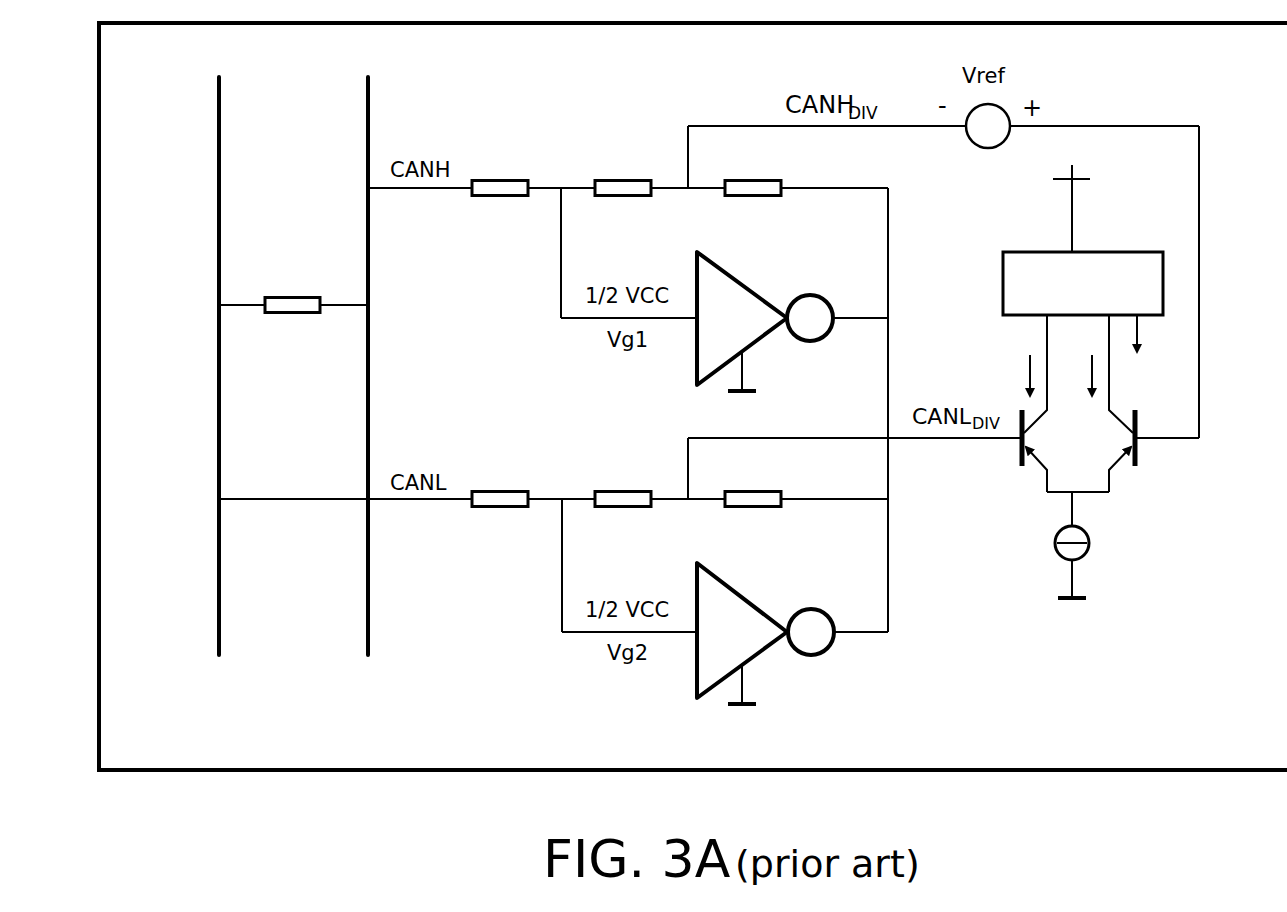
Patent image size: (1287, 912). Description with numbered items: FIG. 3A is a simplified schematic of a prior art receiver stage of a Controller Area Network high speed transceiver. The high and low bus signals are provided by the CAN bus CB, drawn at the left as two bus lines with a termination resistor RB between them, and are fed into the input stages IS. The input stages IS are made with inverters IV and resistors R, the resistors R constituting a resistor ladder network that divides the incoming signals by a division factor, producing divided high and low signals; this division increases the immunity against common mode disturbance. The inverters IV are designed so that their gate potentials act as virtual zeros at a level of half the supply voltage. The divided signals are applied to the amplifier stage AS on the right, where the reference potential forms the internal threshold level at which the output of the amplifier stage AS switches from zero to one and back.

The CAN bus CB is at (330, 667).
The bus termination resistor RB is at (305, 291).
The resistors R is at (632, 170).
The inverters IV is at (743, 334).
The input stages IS is at (679, 741).
The amplifier stage AS is at (1088, 662).